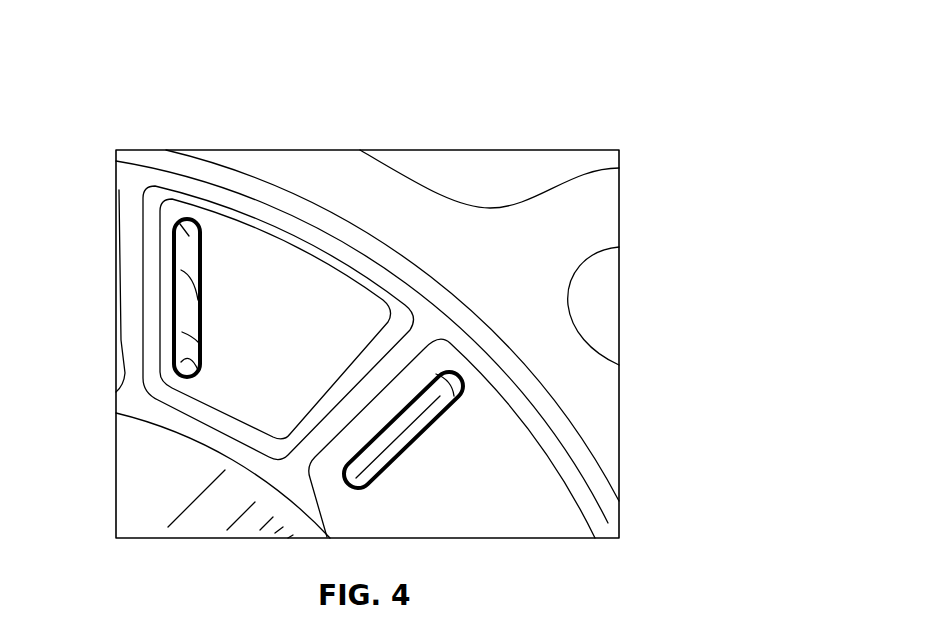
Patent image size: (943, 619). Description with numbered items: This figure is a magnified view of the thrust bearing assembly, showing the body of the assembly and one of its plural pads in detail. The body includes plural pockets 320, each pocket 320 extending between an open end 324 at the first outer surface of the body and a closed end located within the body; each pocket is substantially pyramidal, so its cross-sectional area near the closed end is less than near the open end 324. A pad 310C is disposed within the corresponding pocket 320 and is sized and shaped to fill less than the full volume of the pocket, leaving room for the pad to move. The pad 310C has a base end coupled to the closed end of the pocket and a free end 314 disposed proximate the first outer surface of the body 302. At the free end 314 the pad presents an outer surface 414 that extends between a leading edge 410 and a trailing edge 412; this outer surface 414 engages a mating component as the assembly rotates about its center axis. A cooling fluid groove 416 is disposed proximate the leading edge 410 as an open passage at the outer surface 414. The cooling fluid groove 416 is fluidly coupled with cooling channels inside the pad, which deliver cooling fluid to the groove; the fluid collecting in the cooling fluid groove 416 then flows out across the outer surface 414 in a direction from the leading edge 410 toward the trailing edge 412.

The wheel body 302 is at (354, 163).
The pad 310C is at (253, 265).
The free end 314 is at (356, 303).
The pocket 320 is at (148, 216).
The open end 324 is at (153, 245).
The leading edge 410 is at (176, 215).
The trailing edge 412 is at (370, 345).
The outer surface 414 is at (230, 255).
The cooling fluid groove 416 is at (173, 313).